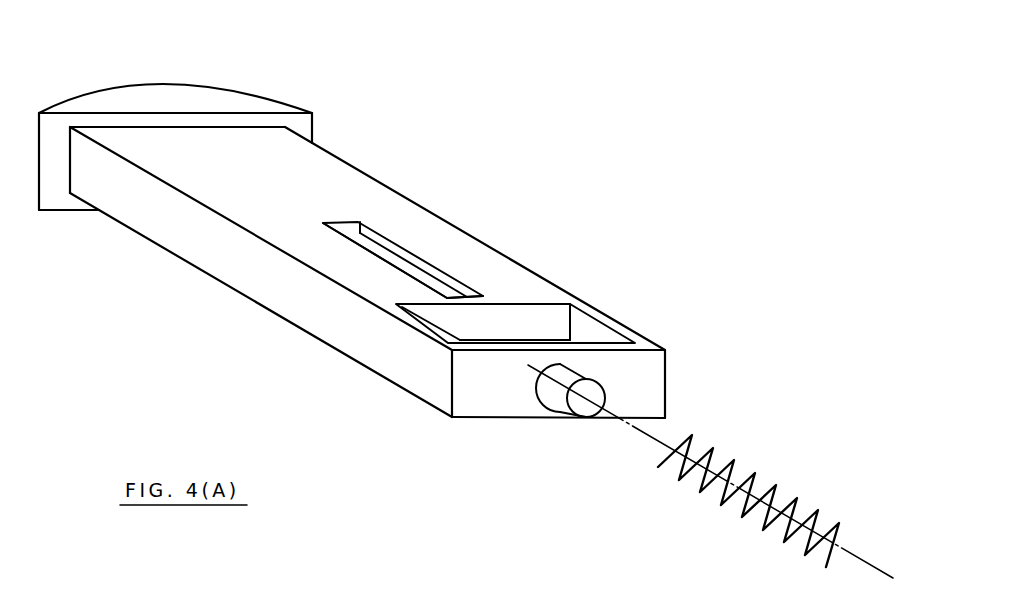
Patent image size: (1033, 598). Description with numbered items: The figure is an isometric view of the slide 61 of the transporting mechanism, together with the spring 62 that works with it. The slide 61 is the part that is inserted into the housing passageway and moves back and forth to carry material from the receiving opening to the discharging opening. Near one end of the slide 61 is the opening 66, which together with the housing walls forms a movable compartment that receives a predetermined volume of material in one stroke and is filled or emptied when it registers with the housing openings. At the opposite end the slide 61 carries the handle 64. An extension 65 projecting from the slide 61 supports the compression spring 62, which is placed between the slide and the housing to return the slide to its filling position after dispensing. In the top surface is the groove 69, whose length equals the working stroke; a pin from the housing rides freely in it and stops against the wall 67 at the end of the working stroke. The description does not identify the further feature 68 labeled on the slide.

The slide 61 is at (360, 272).
The spring 62 is at (722, 513).
The handle 64 is at (178, 112).
The extension 65 is at (658, 471).
The opening 66 is at (446, 355).
The wall 67 is at (417, 212).
The hole 68 is at (537, 246).
The groove 69 is at (448, 231).